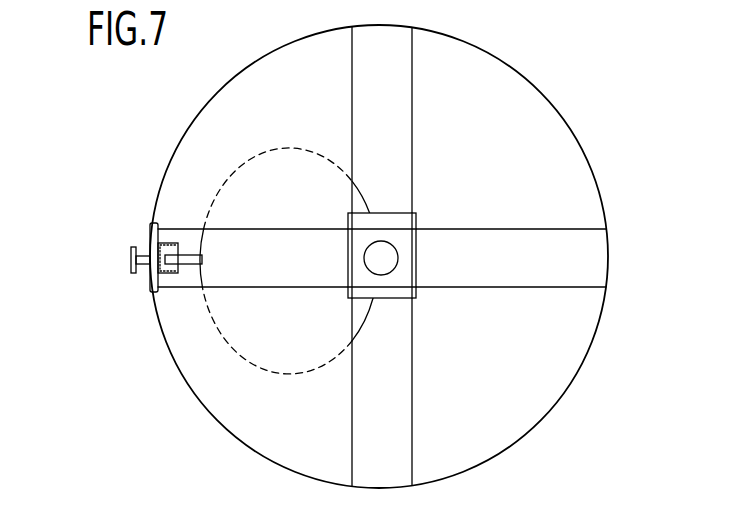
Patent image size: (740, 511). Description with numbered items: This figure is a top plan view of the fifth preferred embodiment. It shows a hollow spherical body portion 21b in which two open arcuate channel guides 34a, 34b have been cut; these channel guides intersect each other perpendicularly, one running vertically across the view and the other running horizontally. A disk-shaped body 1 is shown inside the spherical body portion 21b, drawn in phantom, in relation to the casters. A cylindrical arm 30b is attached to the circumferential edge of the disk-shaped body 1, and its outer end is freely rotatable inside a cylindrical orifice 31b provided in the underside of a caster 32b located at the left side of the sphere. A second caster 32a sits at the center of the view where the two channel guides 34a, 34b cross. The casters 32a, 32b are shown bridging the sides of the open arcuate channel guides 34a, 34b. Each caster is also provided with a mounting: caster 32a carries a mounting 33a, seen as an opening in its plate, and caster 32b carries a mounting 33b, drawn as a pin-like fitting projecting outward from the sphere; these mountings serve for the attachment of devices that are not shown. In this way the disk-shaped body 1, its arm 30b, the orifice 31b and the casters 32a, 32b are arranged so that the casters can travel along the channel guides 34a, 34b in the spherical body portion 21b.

The hollow spherical body portion 21b is at (543, 93).
The open arcuate channel guide 34a is at (402, 81).
The open arcuate channel guide 34b is at (592, 267).
The disk-shaped body 1 is at (316, 163).
The caster 32a is at (392, 222).
The mounting 33a is at (381, 258).
The caster 32b is at (148, 234).
The mounting 33b is at (130, 260).
The cylindrical orifice 31b is at (171, 243).
The cylindrical arm 30b is at (182, 266).